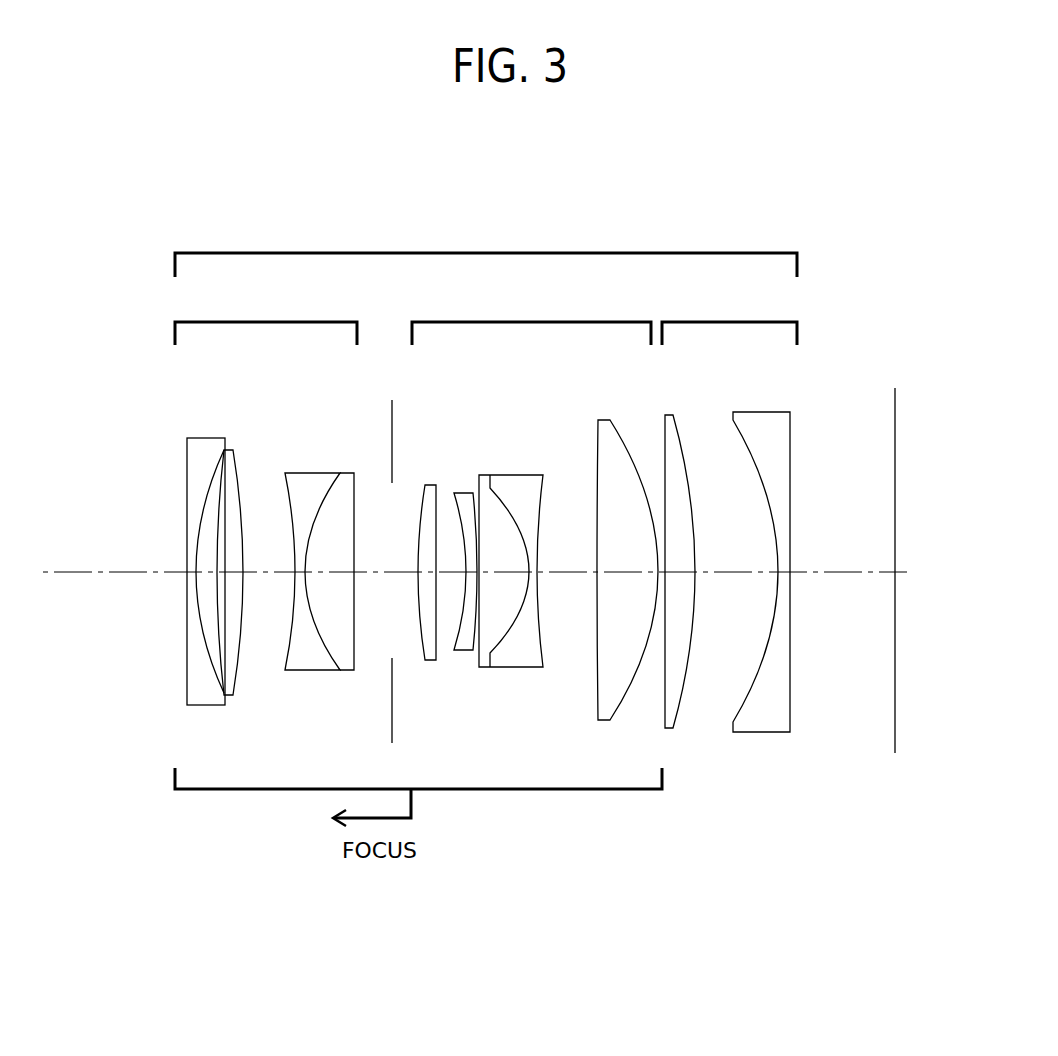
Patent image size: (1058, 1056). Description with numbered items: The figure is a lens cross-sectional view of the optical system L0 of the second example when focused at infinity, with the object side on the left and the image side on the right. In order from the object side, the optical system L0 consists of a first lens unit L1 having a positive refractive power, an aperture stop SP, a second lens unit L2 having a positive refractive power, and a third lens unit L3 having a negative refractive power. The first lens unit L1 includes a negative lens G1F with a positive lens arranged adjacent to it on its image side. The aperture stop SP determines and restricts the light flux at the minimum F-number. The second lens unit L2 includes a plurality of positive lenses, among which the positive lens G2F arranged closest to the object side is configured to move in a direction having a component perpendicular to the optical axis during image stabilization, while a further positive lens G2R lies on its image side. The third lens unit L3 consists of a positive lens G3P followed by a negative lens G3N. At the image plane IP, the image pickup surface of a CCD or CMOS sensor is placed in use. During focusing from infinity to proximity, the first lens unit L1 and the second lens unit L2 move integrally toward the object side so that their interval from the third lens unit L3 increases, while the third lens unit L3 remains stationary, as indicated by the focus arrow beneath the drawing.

The optical system L0 is at (486, 248).
The first lens unit L1 is at (266, 316).
The second lens unit L2 is at (531, 316).
The third lens unit L3 is at (729, 316).
The negative lens of first lens unit G1F is at (205, 450).
The positive lens G2F is at (430, 492).
The positive lens of second lens unit G2R is at (605, 433).
The positive lens G3P is at (672, 428).
The negative lens G3N is at (780, 420).
The aperture stop SP is at (390, 715).
The image plane IP is at (895, 502).